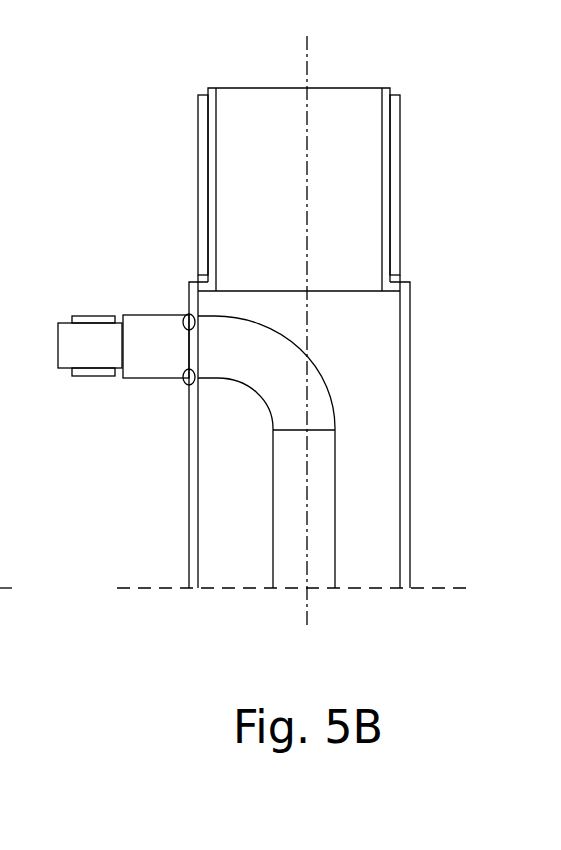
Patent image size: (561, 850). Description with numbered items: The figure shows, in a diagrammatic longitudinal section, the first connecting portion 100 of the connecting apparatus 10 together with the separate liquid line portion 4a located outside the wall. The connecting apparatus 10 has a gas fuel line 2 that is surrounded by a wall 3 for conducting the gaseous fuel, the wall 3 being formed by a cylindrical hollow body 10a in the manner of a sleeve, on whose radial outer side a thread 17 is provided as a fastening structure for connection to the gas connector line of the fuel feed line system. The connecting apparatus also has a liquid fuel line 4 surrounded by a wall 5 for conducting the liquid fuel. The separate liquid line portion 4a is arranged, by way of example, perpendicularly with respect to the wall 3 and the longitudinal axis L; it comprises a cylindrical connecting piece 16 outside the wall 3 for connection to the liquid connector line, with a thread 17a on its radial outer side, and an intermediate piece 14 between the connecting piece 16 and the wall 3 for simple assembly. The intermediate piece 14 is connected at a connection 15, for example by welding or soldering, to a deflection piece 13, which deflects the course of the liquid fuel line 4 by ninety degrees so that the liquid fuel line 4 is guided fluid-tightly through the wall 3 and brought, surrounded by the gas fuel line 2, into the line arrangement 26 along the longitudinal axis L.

The gas fuel line 2 is at (261, 149).
The thread 17 is at (199, 120).
The connecting apparatus 10 is at (303, 380).
The first connecting portion 100 is at (303, 380).
The wall 3 is at (402, 295).
The cylindrical hollow body 10a is at (446, 431).
The separate liquid line portion 4a is at (116, 346).
The intermediate piece 14 is at (157, 323).
The cylindrical connecting piece 16 is at (80, 347).
The thread 17a is at (87, 377).
The connection 15 is at (186, 384).
The deflection piece 13 is at (323, 375).
The liquid fuel line 4 is at (274, 500).
The wall 5 is at (335, 497).
The line arrangement 26 is at (225, 592).
The longitudinal axis L is at (307, 598).